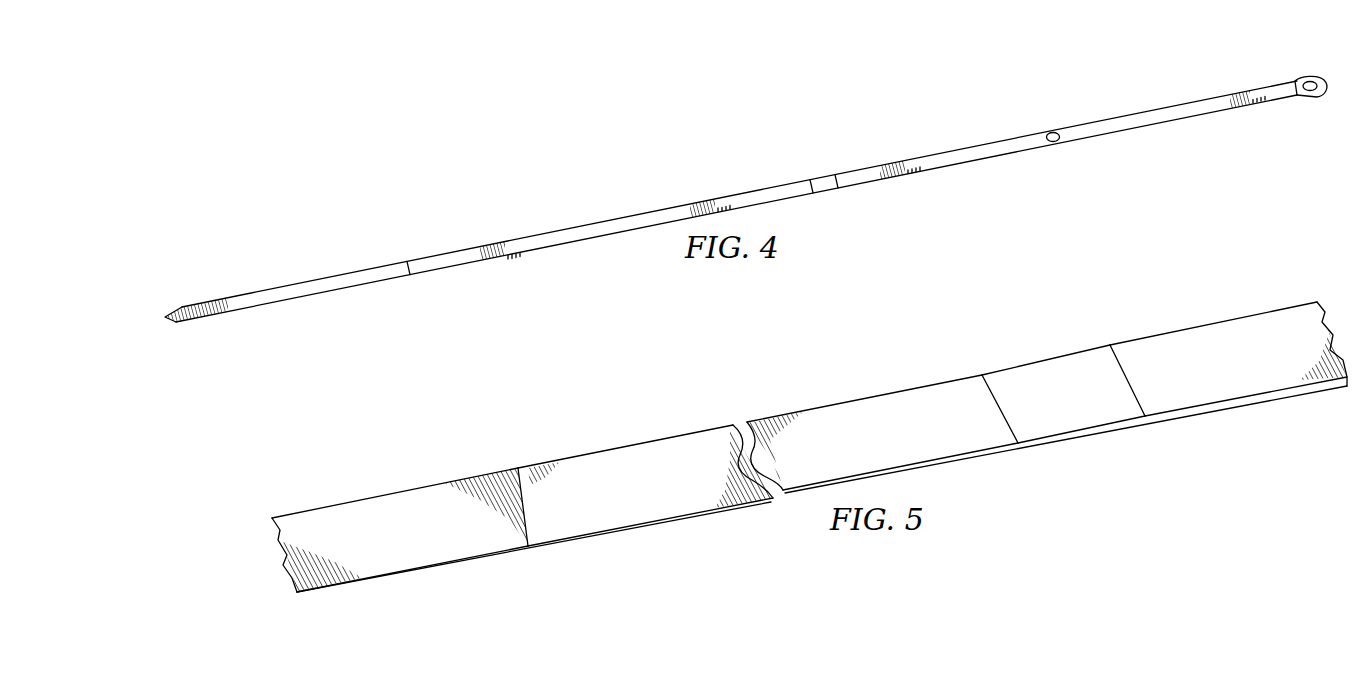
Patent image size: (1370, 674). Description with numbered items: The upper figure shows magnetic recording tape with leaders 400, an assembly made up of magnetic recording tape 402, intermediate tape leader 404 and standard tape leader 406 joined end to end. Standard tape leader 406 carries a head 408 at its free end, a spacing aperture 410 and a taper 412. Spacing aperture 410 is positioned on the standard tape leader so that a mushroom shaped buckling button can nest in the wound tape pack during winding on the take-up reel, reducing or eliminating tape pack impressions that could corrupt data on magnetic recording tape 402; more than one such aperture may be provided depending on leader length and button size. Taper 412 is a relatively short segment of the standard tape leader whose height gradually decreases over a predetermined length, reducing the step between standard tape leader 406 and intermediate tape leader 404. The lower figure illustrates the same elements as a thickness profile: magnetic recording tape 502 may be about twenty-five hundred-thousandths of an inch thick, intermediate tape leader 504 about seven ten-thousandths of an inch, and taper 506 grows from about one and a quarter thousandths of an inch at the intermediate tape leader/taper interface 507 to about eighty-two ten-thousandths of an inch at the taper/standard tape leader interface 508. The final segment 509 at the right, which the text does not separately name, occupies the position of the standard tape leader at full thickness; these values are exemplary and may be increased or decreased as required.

In FIG. 4, the magnetic recording tape with leaders 400 is at (490, 160).
In FIG. 4, the magnetic recording tape 402 is at (284, 288).
In FIG. 4, the intermediate tape leader 404 is at (606, 223).
In FIG. 4, the standard tape leader 406 is at (962, 150).
In FIG. 4, the head 408 is at (1305, 78).
In FIG. 4, the spacing aperture 410 is at (1062, 137).
In FIG. 4, the taper 412 is at (823, 180).
In FIG. 5, the magnetic recording tape 502 is at (378, 505).
In FIG. 5, the intermediate tape leader 504 is at (630, 454).
In FIG. 5, the taper 506 is at (1052, 361).
In FIG. 5, the intermediate tape leader/taper interface 507 is at (998, 404).
In FIG. 5, the taper/standard tape leader interface 508 is at (1127, 374).
In FIG. 5, the end segment 509 is at (1230, 323).